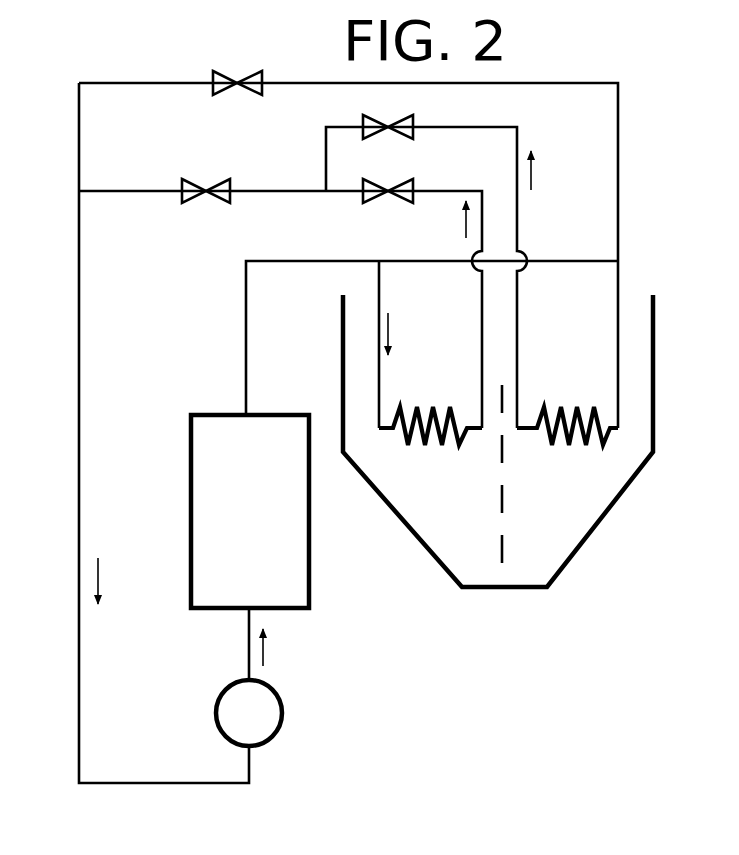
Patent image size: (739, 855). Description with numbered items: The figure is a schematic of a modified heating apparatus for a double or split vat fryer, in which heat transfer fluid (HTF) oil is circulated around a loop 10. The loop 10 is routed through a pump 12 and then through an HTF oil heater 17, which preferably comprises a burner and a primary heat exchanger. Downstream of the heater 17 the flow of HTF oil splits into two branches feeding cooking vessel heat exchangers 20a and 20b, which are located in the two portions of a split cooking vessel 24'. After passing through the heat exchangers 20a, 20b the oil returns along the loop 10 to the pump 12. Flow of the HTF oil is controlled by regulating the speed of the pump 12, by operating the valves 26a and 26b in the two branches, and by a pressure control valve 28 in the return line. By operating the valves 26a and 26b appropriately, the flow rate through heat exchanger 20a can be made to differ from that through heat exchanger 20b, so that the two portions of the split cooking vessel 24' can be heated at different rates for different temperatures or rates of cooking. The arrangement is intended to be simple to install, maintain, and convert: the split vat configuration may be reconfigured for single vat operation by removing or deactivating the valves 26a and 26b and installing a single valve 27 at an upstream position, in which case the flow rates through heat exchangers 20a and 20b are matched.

The loop 10 is at (78, 312).
The pump 12 is at (276, 714).
The HTF oil heater 17 is at (296, 562).
The cooking vessel heat exchanger 20a is at (430, 445).
The cooking vessel heat exchanger 20b is at (567, 445).
The split cooking vessel 24' is at (498, 441).
The valve 26a is at (371, 204).
The valve 26b is at (381, 140).
The single valve 27 is at (227, 204).
The pressure control valve 28 is at (257, 96).